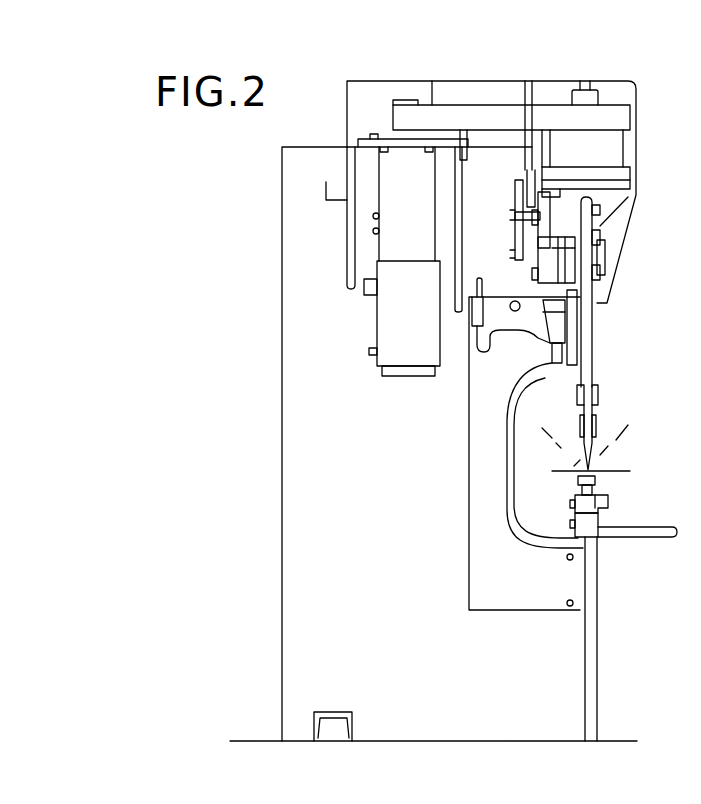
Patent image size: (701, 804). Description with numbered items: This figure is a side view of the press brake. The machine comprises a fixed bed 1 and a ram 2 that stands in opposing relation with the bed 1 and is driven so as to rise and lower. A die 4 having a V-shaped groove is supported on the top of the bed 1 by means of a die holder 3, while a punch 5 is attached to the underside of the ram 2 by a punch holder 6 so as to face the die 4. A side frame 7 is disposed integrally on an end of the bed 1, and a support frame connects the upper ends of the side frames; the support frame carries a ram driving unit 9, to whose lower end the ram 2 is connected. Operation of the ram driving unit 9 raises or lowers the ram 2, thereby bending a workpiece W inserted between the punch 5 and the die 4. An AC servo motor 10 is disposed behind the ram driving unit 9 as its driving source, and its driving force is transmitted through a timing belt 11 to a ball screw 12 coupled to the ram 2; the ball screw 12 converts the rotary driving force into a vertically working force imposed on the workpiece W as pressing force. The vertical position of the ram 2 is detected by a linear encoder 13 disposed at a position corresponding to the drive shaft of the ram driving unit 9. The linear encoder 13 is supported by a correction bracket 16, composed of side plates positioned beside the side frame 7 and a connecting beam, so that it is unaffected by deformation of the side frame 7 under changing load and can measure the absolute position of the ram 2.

The bed 1 is at (598, 592).
The ram 2 is at (587, 372).
The die holder 3 is at (600, 499).
The die 4 is at (596, 481).
The punch 5 is at (594, 448).
The punch holder 6 is at (590, 404).
The side frame 7 is at (290, 452).
The ram driving unit 9 is at (630, 156).
The AC servo motor 10 is at (394, 312).
The timing belt 11 is at (462, 118).
The ball screw 12 is at (598, 240).
The linear encoder 13 is at (577, 327).
The correction bracket 16 is at (488, 565).
The workpiece W is at (604, 471).